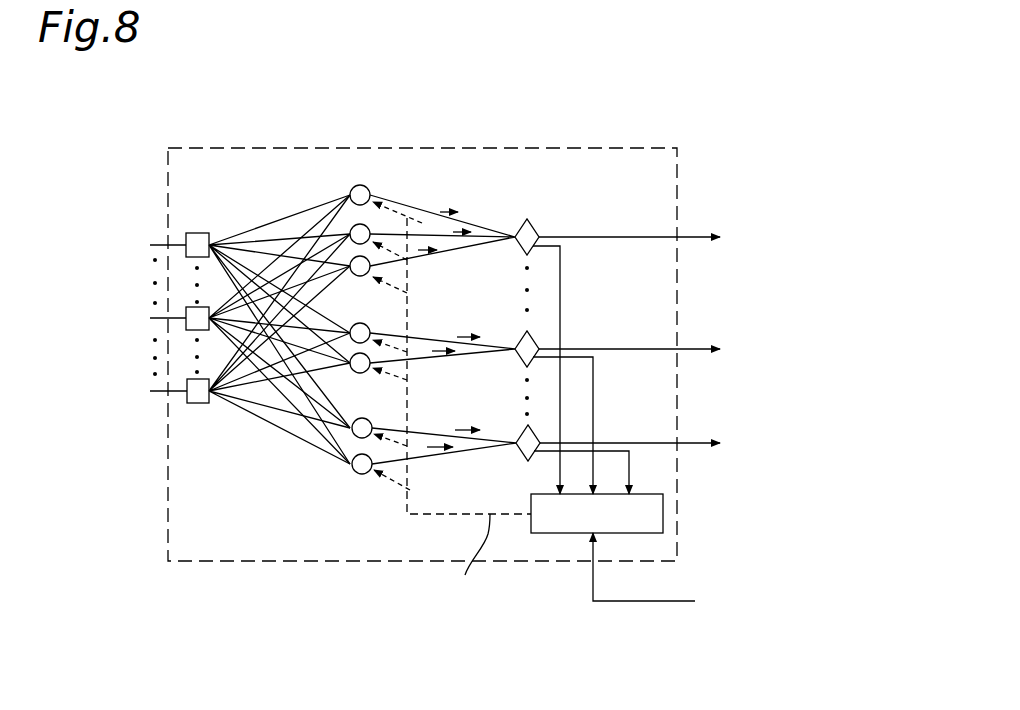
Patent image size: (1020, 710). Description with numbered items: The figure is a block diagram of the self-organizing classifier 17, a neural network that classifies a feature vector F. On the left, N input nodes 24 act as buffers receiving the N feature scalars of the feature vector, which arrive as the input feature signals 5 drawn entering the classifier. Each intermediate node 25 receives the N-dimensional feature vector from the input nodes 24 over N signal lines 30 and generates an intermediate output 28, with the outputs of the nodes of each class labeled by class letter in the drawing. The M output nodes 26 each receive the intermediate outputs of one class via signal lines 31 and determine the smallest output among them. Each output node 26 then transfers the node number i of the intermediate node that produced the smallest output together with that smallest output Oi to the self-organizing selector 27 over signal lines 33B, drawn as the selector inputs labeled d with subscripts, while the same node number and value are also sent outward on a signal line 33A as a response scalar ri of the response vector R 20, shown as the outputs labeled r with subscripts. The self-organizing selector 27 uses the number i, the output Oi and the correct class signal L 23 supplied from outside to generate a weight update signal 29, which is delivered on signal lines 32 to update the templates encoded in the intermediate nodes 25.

The input feature signals 5 is at (100, 232).
The self-organizing classifier 17 is at (645, 148).
The response vector R 20 is at (727, 230).
The correct class signal L 23 is at (860, 630).
The input nodes 24 is at (197, 233).
The intermediate nodes 25 is at (368, 186).
The output nodes 26 is at (528, 219).
The self-organizing selector 27 is at (663, 515).
The intermediate output 28 is at (420, 172).
The weight update signal 29 is at (498, 612).
The signal lines 30 is at (248, 234).
The signal lines 31 is at (470, 226).
The signal lines 32 is at (488, 515).
The signal line 33A is at (597, 237).
The signal lines 33B is at (560, 272).